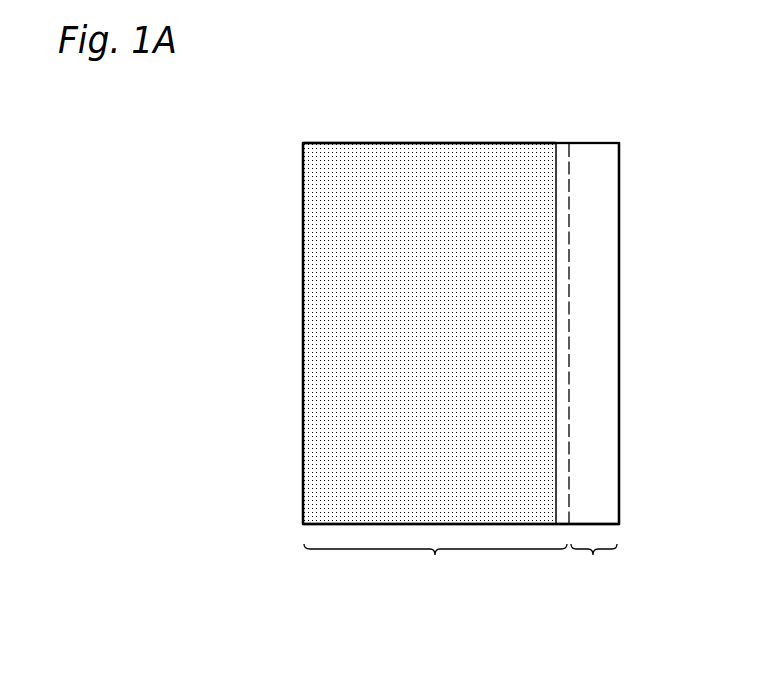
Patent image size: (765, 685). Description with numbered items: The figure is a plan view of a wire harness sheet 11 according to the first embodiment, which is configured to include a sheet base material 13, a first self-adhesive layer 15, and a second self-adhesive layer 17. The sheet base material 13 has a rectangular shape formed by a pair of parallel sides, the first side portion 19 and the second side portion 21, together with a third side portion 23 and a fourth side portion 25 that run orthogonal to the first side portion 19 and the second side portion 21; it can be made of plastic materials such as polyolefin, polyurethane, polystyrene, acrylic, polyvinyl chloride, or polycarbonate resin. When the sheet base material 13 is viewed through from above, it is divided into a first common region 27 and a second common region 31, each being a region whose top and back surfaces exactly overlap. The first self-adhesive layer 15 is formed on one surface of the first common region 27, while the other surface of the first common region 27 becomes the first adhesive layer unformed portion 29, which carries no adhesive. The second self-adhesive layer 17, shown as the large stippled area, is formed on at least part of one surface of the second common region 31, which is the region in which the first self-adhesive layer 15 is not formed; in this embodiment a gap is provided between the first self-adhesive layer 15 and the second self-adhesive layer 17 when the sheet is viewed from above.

The wire harness sheet 11 is at (263, 142).
The sheet base material 13 is at (600, 142).
The first self-adhesive layer 15 is at (595, 446).
The second self-adhesive layer 17 is at (326, 433).
The first side portion 19 is at (489, 142).
The second side portion 21 is at (331, 526).
The third side portion 23 is at (303, 211).
The fourth side portion 25 is at (620, 211).
The first common region 27 is at (594, 563).
The first adhesive layer unformed portion 29 is at (595, 363).
The second common region 31 is at (435, 563).